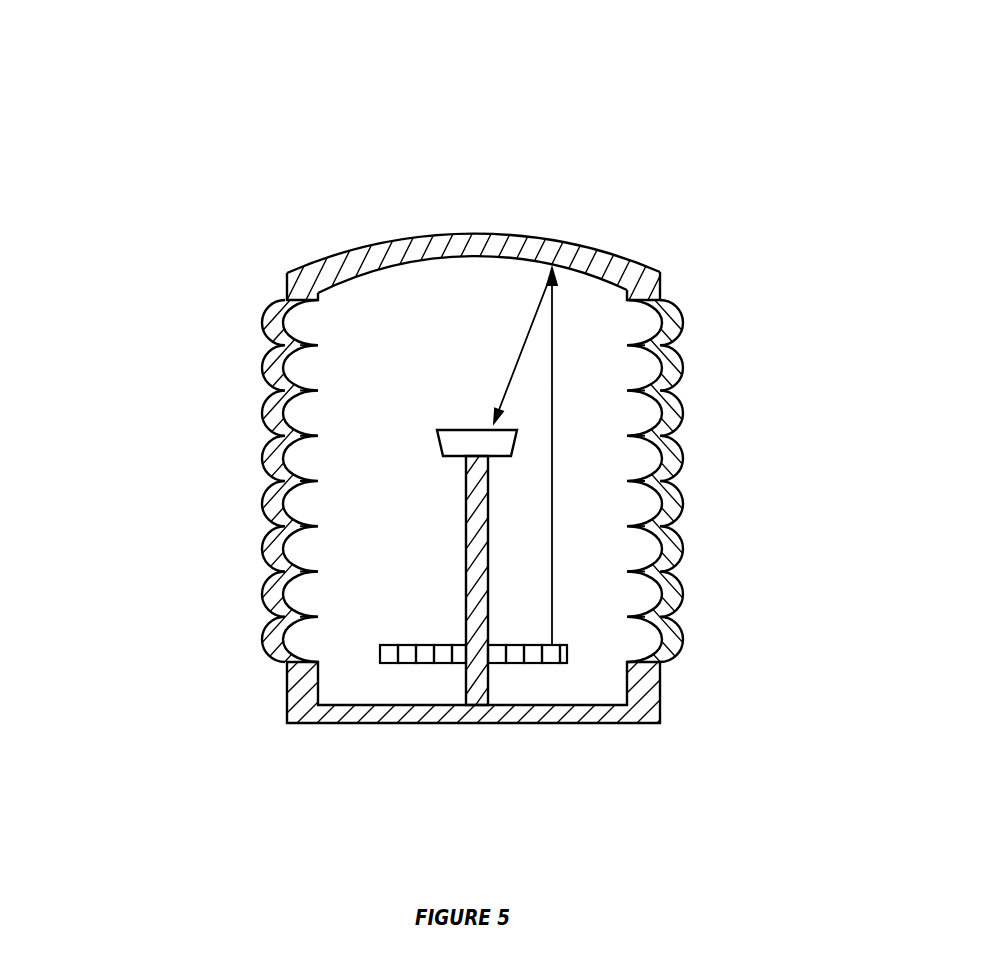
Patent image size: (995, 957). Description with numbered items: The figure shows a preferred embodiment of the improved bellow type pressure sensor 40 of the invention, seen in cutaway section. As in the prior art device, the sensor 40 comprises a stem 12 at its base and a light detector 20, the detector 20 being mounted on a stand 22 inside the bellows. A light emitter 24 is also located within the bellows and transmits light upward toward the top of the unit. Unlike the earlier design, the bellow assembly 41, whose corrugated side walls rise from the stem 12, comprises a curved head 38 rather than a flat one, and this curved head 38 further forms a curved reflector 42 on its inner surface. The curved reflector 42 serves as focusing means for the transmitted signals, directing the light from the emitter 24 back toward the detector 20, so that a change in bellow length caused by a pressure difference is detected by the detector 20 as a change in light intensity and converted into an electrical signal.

The stem 12 is at (661, 694).
The light detector 20 is at (437, 443).
The stand 22 is at (484, 680).
The light emitter 24 is at (408, 645).
The curved head 38 is at (512, 233).
The bellow type pressure sensor 40 is at (572, 196).
The bellow assembly 41 is at (262, 458).
The curved reflector 42 is at (435, 266).